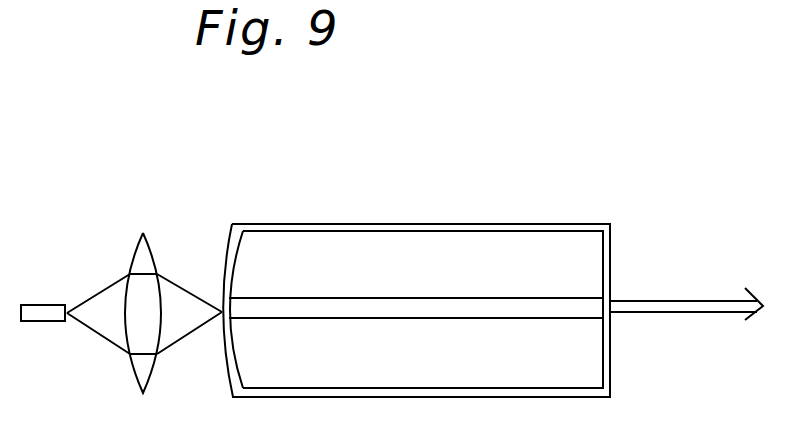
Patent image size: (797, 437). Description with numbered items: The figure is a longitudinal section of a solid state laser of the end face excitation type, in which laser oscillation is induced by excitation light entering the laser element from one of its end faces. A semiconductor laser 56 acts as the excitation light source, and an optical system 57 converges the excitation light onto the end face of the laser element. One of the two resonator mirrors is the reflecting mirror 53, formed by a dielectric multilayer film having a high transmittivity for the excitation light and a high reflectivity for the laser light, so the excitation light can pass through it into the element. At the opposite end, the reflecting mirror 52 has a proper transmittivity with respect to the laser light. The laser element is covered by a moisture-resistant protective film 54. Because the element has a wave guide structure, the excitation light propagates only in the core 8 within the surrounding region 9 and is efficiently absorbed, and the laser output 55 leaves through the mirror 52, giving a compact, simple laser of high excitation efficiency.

The semiconductor laser 56 is at (48, 305).
The optical system 57 is at (143, 233).
The reflecting mirror 53 is at (233, 258).
The moisture-resistant protective film 54 is at (357, 227).
The inner tube / fluid region 9 is at (545, 240).
The optical fiber rod 8 is at (442, 305).
The reflecting mirror 52 is at (610, 265).
The output light beam 55 is at (703, 295).